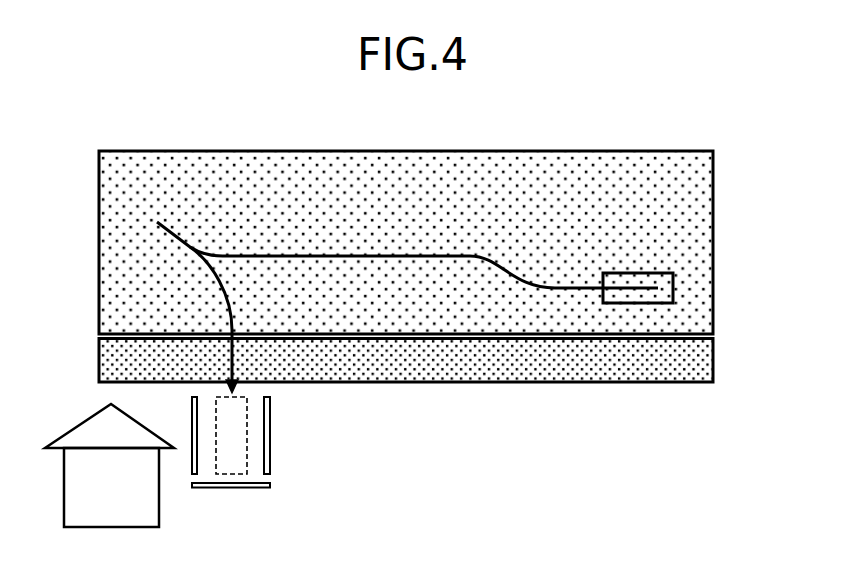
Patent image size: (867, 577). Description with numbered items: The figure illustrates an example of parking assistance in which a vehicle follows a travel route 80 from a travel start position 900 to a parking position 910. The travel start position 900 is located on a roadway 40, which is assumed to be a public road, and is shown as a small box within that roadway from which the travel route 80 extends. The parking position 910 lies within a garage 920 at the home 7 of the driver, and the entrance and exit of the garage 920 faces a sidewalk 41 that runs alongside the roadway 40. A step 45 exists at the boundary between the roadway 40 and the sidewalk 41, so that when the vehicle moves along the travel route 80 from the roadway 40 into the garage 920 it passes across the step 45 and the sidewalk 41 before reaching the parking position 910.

The home 7 is at (77, 433).
The roadway 40 is at (703, 168).
The sidewalk 41 is at (703, 359).
The step 45 is at (713, 338).
The travel route 80 is at (246, 256).
The travel start position 900 is at (632, 273).
The parking position 910 is at (248, 433).
The garage 920 is at (259, 477).